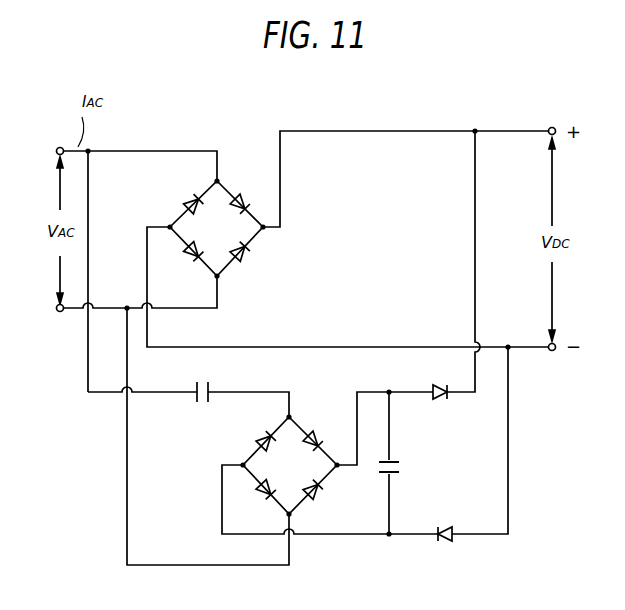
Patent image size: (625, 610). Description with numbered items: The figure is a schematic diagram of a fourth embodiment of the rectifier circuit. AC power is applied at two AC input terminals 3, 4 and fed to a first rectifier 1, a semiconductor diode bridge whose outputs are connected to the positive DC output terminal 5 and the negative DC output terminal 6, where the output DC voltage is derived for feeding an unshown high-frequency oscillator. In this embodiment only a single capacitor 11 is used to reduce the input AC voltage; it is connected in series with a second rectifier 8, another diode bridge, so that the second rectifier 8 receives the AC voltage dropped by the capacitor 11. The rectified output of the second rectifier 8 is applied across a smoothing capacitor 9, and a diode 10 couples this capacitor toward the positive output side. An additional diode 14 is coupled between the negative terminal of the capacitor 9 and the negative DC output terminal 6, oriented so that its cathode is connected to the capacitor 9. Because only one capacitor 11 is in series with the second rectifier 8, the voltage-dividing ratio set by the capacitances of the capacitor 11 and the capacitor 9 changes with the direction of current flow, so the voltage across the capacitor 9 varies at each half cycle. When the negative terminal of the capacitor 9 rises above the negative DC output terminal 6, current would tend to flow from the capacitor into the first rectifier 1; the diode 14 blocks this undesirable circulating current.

The first rectifier 1 is at (219, 235).
The AC input terminal 3 is at (57, 148).
The AC input terminal 4 is at (60, 314).
The DC output terminal 5 is at (551, 127).
The negative DC output terminal 6 is at (550, 352).
The second rectifier 8 is at (297, 470).
The smoothing capacitor 9 is at (398, 470).
The diode 10 is at (438, 400).
The capacitor 11 is at (210, 390).
The diode 14 is at (447, 541).